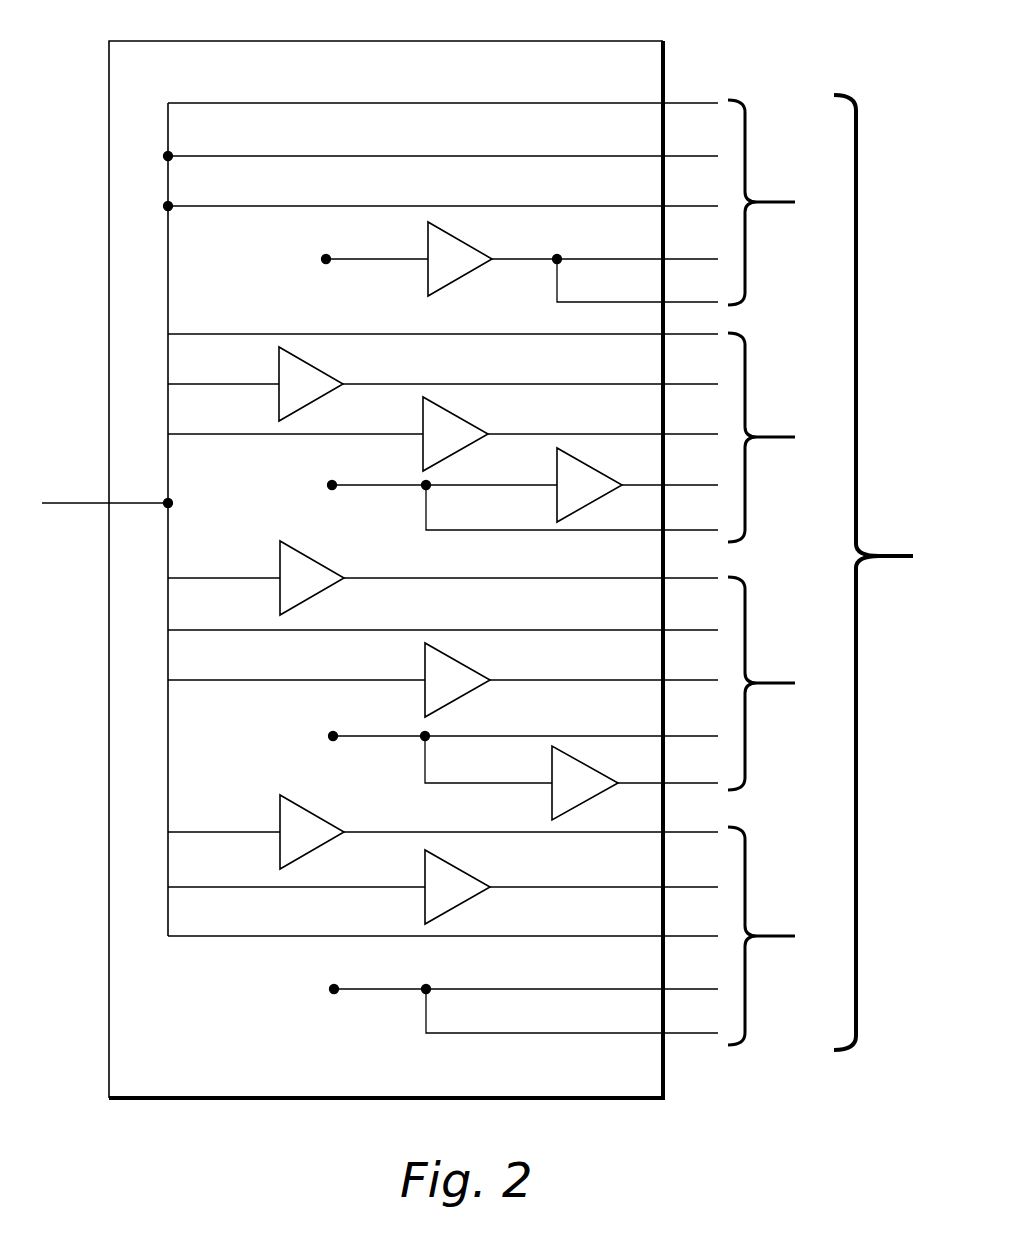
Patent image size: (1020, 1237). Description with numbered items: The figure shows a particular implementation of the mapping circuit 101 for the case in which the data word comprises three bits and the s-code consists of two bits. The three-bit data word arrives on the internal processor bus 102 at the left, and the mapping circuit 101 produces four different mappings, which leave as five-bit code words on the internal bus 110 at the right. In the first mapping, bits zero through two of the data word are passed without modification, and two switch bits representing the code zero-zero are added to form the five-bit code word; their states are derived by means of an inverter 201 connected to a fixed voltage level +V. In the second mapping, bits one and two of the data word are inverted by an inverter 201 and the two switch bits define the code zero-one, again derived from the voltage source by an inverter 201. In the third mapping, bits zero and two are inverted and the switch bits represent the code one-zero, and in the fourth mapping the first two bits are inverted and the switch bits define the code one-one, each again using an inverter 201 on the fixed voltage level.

The mapping circuit 101 is at (357, 42).
The internal processor bus 102 is at (86, 503).
The internal bus 110 is at (900, 556).
The inverter 201 is at (479, 861).